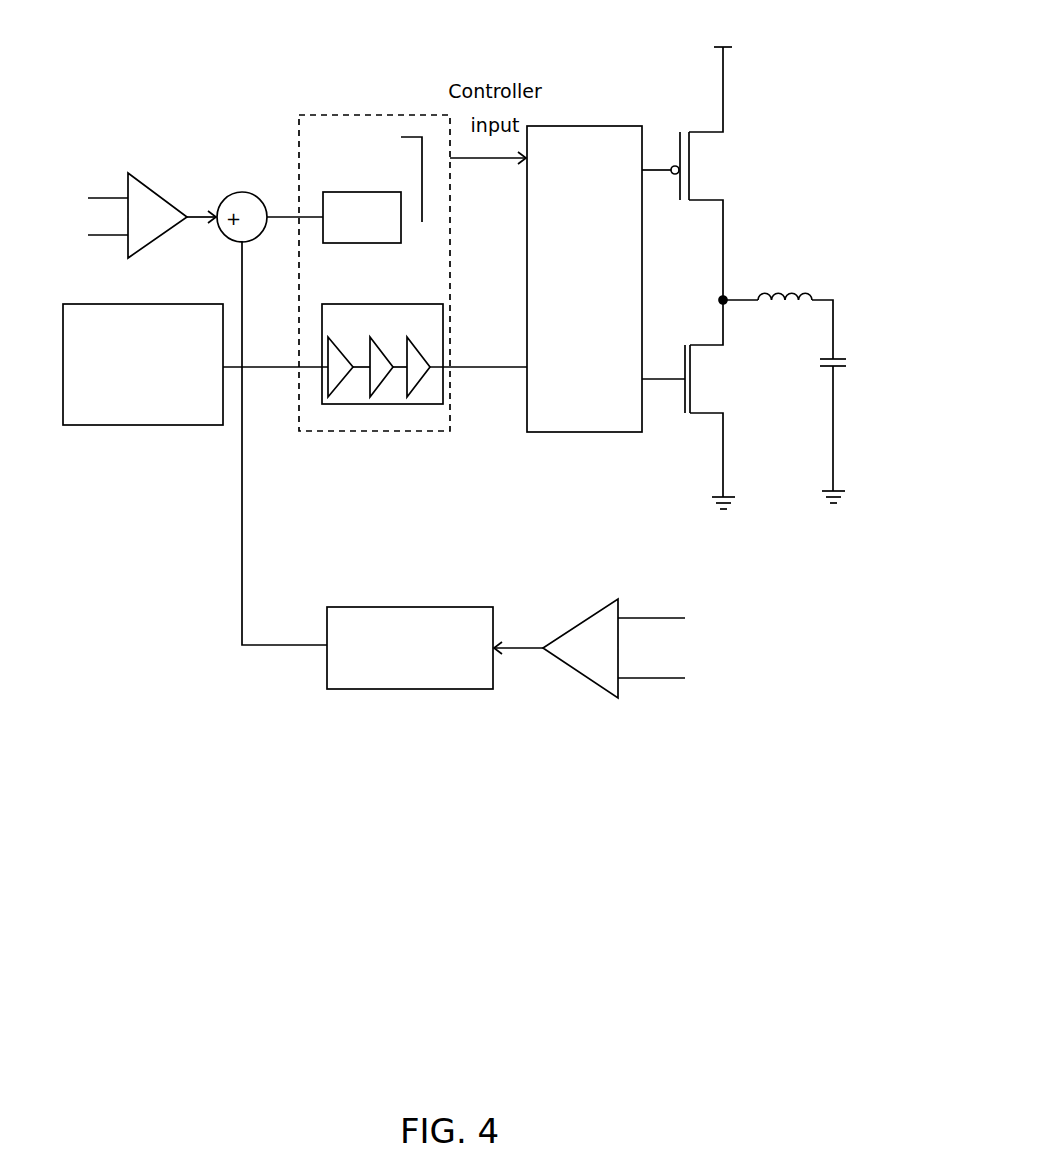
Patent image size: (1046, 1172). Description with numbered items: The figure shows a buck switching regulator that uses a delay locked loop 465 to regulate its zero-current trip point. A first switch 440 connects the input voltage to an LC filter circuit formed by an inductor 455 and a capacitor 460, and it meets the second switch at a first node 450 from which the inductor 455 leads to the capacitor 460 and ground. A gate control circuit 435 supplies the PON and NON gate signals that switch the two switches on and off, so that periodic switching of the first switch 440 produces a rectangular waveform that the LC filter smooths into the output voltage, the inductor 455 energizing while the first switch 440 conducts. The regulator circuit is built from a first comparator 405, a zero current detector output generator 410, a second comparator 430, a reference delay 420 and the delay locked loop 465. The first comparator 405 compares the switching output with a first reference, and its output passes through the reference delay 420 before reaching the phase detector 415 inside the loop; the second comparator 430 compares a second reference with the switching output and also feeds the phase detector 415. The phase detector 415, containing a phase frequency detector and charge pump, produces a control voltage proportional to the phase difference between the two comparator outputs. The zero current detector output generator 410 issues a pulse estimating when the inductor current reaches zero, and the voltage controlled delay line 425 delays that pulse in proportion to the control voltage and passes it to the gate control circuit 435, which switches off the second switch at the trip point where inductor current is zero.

The first comparator 405 is at (588, 615).
The zero current detector output generator 410 is at (203, 304).
The phase detector 415 is at (372, 192).
The reference delay 420 is at (425, 607).
The voltage controlled delay line 425 is at (391, 304).
The second comparator 430 is at (146, 172).
The gate control circuit 435 is at (626, 126).
The first switch 440 is at (716, 131).
The first node 450 is at (720, 296).
The inductor 455 is at (802, 293).
The capacitor 460 is at (828, 368).
The delay locked loop 465 is at (407, 115).